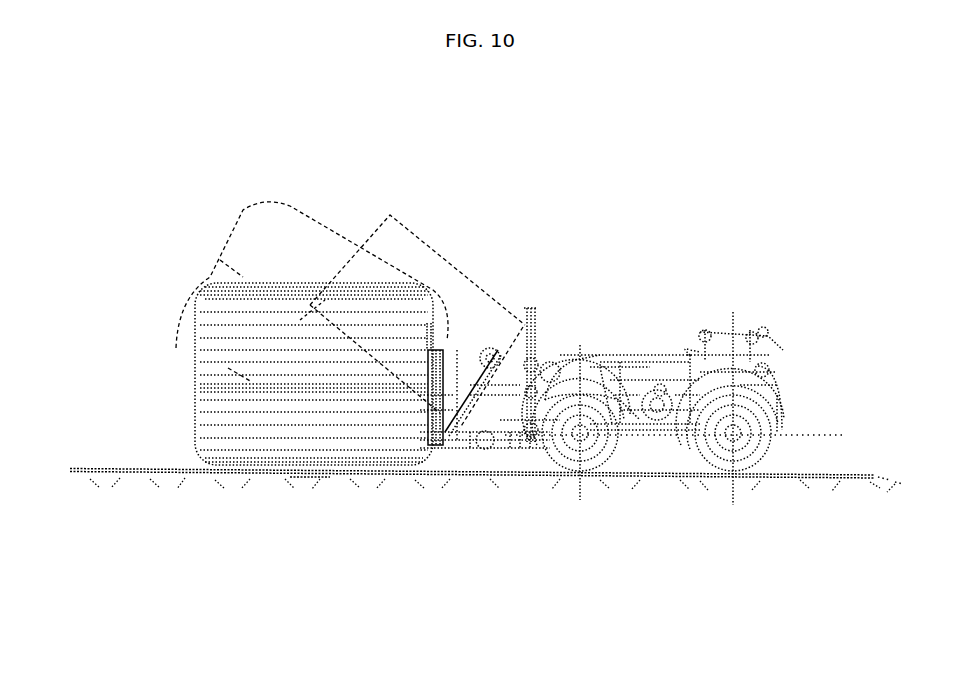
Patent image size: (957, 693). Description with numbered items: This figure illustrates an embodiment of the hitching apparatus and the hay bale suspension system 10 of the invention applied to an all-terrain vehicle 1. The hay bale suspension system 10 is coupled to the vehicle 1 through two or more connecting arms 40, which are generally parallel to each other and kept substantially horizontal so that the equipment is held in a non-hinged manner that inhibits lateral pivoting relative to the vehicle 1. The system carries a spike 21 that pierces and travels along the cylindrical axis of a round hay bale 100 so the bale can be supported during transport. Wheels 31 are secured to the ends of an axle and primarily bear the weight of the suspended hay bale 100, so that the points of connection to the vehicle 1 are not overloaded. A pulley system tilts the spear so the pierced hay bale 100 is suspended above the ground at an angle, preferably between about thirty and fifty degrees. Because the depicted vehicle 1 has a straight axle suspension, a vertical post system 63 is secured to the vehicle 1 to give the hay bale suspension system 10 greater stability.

The vehicle 1 is at (688, 372).
The hay bale suspension system 10 is at (316, 508).
The spike 21 is at (313, 390).
The wheels 31 is at (465, 450).
The connecting arms 40 is at (498, 450).
The vertical post system 63 is at (547, 292).
The hay bale 100 is at (247, 408).